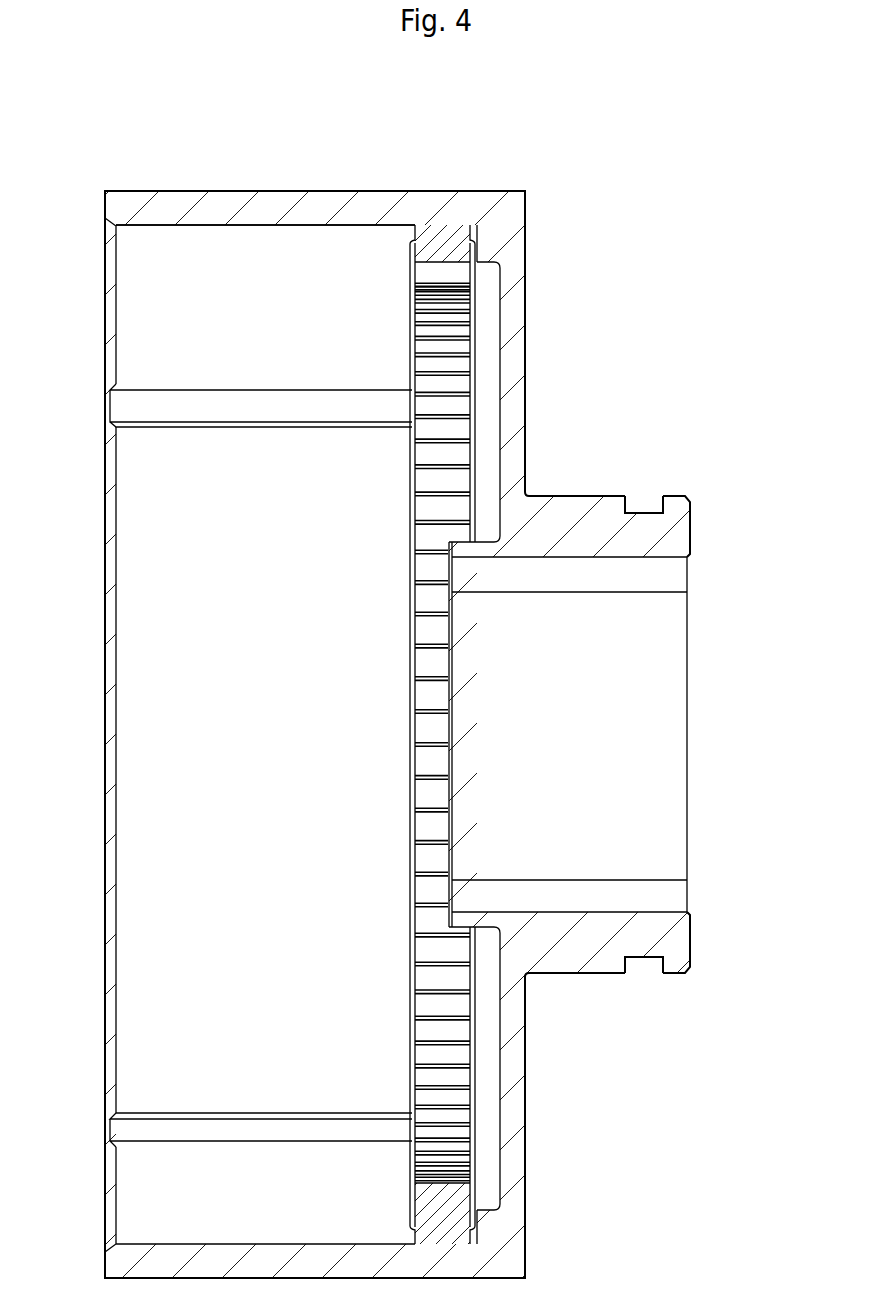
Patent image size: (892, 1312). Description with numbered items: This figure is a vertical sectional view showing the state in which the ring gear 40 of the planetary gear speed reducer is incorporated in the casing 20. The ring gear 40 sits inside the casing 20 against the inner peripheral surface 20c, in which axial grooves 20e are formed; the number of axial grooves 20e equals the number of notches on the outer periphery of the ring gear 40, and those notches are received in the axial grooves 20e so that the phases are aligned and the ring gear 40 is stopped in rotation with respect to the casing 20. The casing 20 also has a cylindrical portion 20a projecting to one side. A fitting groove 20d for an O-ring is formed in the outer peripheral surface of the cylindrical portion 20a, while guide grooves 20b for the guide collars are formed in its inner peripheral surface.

The casing 20 is at (363, 189).
The cylindrical portion 20a is at (570, 497).
The guide grooves 20b is at (621, 578).
The inner peripheral surface 20c is at (270, 226).
The fitting groove 20d is at (643, 511).
The axial grooves 20e is at (232, 407).
The ring gear 40 is at (453, 240).